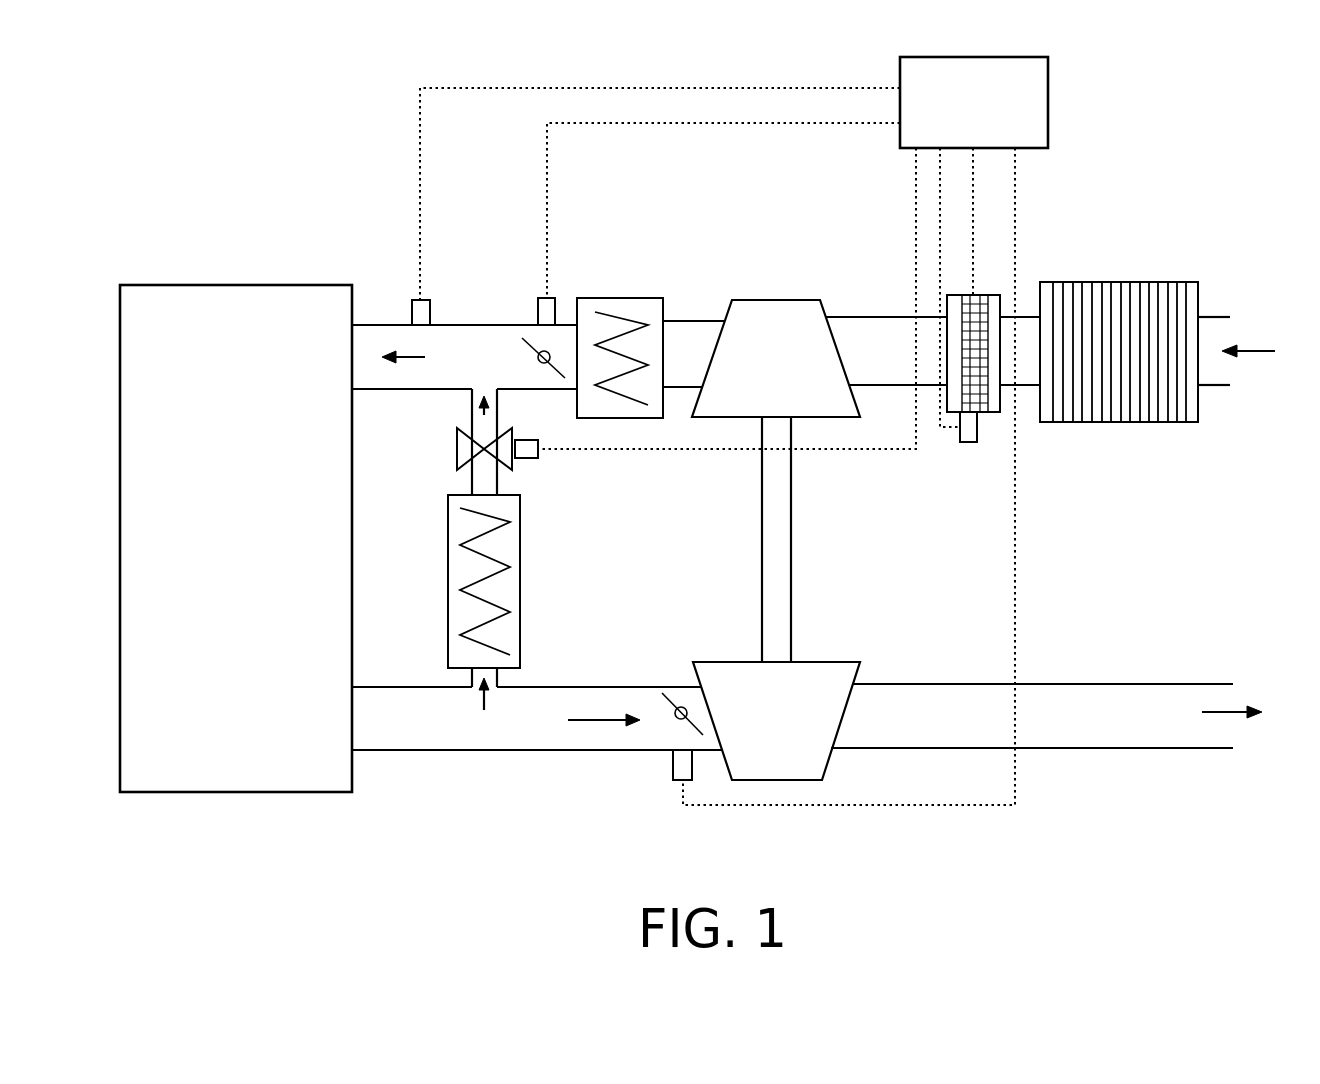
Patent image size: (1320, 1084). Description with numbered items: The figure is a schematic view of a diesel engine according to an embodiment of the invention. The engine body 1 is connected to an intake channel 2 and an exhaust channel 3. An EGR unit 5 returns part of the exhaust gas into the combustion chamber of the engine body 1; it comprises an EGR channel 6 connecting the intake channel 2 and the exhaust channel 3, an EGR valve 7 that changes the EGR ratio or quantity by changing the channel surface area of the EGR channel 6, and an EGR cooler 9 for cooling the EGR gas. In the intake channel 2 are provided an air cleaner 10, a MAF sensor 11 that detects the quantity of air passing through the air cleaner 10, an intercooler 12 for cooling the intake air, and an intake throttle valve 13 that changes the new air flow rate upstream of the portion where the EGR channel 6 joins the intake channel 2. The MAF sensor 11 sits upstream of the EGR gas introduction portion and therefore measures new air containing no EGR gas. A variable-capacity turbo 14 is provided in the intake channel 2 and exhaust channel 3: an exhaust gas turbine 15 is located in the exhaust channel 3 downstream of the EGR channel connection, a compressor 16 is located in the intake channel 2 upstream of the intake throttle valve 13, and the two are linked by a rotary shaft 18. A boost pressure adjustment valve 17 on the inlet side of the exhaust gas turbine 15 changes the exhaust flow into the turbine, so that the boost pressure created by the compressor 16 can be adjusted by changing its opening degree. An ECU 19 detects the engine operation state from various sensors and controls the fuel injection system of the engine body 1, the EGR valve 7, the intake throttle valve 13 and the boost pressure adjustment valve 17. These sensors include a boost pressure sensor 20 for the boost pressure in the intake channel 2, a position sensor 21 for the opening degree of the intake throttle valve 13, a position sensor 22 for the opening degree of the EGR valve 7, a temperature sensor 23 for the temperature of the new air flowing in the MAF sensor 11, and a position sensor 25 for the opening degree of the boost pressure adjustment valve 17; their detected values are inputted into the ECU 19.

The engine body 1 is at (226, 532).
The intake channel 2 is at (490, 323).
The exhaust channel 3 is at (478, 752).
The EGR unit 5 is at (504, 549).
The EGR channel 6 is at (478, 478).
The EGR valve 7 is at (457, 432).
The EGR cooler 9 is at (448, 587).
The air cleaner 10 is at (1135, 283).
The MAF sensor 11 is at (990, 295).
The intercooler 12 is at (640, 298).
The intake throttle valve 13 is at (548, 365).
The variable-capacity turbo 14 is at (786, 540).
The exhaust gas turbine 15 is at (795, 727).
The compressor 16 is at (794, 368).
The boost pressure adjustment valve 17 is at (681, 706).
The rotary shaft 18 is at (782, 490).
The ECU 19 is at (991, 112).
The boost pressure sensor 20 is at (413, 310).
The position sensor 21 is at (553, 300).
The position sensor 22 is at (538, 462).
The temperature sensor 23 is at (968, 445).
The position sensor 25 is at (673, 770).